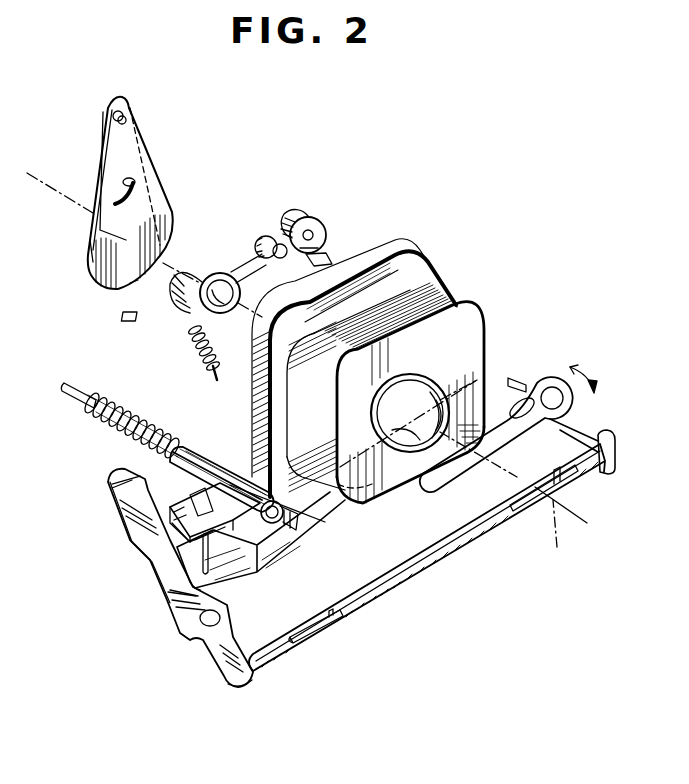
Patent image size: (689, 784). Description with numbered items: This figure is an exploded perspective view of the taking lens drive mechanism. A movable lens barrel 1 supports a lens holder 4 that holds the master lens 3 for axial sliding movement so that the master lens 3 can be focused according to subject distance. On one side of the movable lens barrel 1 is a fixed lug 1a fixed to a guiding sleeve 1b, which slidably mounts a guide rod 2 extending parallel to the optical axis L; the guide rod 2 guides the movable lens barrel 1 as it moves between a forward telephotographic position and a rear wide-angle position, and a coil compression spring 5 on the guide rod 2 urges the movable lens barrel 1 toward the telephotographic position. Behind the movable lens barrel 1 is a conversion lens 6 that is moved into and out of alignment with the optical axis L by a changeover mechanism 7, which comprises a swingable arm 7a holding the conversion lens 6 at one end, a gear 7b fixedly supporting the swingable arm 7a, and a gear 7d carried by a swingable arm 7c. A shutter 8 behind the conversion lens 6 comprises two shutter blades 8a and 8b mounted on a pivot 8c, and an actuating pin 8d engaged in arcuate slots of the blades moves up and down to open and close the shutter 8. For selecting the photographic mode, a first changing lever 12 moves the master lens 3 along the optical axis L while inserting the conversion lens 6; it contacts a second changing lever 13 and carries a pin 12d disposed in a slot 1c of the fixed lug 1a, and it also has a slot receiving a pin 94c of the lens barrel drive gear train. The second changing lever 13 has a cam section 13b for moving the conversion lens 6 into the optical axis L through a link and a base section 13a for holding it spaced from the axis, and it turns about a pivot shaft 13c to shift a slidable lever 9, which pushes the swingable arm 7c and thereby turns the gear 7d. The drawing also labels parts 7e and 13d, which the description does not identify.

The movable lens barrel 1 is at (487, 332).
The fixed lug 1a is at (160, 536).
The guiding sleeve 1b is at (214, 466).
The slot 1c is at (165, 540).
The guide rod 2 is at (78, 400).
The master lens 3 is at (395, 376).
The lens holder 4 is at (462, 385).
The coil compression spring 5 is at (122, 437).
The conversion lens 6 is at (218, 286).
The changeover mechanism 7 is at (302, 192).
The swingable arm 7a is at (246, 268).
The gear 7b is at (271, 235).
The swingable arm 7c is at (322, 260).
The gear 7d is at (313, 222).
The spring 7e is at (195, 346).
The shutter 8 is at (94, 136).
The shutter blade 8a is at (92, 250).
The shutter blade 8b is at (134, 278).
The pivot 8c is at (124, 110).
The actuating pin 8d is at (136, 184).
The slidable lever 9 is at (392, 583).
The first changing lever 12 is at (294, 558).
The pin 12d is at (215, 562).
The second changing lever 13 is at (176, 630).
The base section 13a is at (112, 486).
The cam section 13b is at (176, 592).
The pivot shaft 13c is at (208, 626).
The lever lower end 13d is at (241, 688).
The pin 94c is at (550, 386).
The optical axis L is at (513, 500).